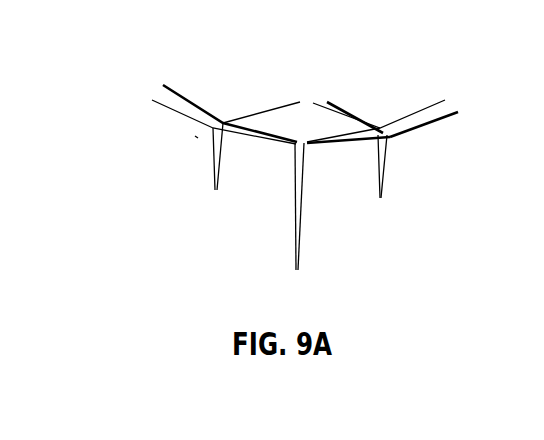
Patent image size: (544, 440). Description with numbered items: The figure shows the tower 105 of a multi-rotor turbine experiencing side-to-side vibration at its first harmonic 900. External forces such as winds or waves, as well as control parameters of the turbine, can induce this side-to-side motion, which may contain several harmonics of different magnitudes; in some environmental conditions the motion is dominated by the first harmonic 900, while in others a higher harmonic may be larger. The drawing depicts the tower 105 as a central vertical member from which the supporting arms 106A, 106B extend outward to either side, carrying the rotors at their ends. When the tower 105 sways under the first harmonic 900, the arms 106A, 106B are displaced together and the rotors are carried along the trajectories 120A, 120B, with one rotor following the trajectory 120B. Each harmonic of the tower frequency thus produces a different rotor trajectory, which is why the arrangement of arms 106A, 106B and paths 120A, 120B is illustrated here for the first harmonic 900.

The first harmonic 900 is at (305, 167).
The tower 105 is at (302, 257).
The first wing panel 106A is at (460, 100).
The second wing panel 106B is at (229, 84).
The first hinge/leg 120A is at (375, 114).
The trajectory 120B is at (192, 133).